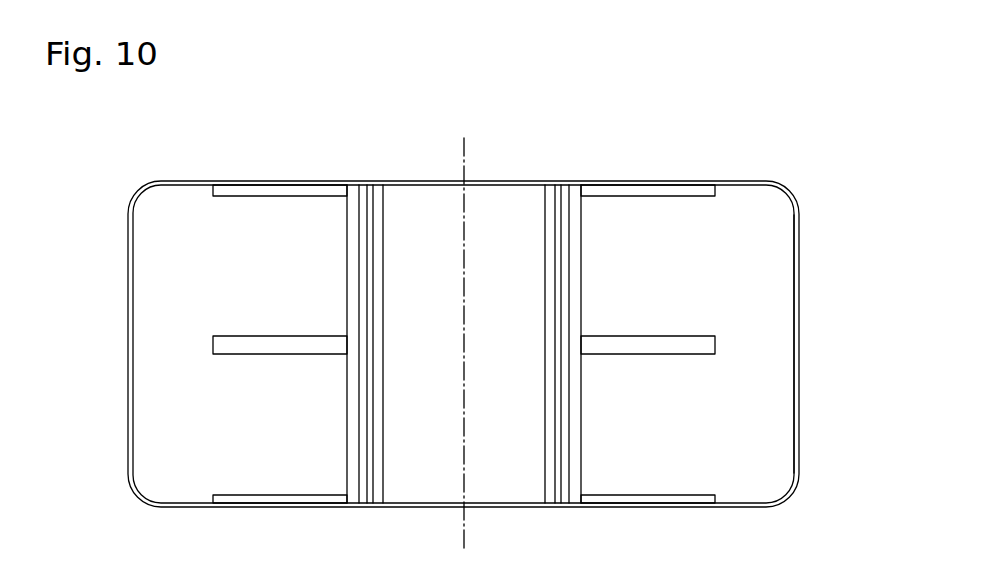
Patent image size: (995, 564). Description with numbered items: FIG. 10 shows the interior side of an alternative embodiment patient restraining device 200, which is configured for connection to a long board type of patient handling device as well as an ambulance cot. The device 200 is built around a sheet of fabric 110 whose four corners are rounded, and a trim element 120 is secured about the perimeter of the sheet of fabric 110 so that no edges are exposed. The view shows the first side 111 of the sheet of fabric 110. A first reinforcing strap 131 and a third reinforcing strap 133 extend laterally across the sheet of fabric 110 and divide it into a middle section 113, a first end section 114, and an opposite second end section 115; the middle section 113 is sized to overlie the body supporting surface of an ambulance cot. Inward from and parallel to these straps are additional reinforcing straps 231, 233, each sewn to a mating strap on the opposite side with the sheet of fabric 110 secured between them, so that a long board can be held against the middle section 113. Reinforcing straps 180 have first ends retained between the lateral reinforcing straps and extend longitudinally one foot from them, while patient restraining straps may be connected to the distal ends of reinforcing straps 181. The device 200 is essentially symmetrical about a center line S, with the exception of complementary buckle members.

The patient restraining device 200 is at (727, 67).
The sheet of fabric 110 is at (145, 187).
The first side 111 is at (743, 300).
The middle section 113 is at (437, 220).
The first end section 114 is at (192, 205).
The second end section 115 is at (648, 220).
The trim element 120 is at (787, 195).
The first reinforcing strap 131 is at (355, 218).
The third reinforcing strap 133 is at (577, 190).
The reinforcing strap 231 is at (380, 193).
The reinforcing strap 233 is at (552, 193).
The reinforcing strap 180 is at (695, 190).
The reinforcing strap 181 is at (280, 529).
The center line S is at (466, 152).